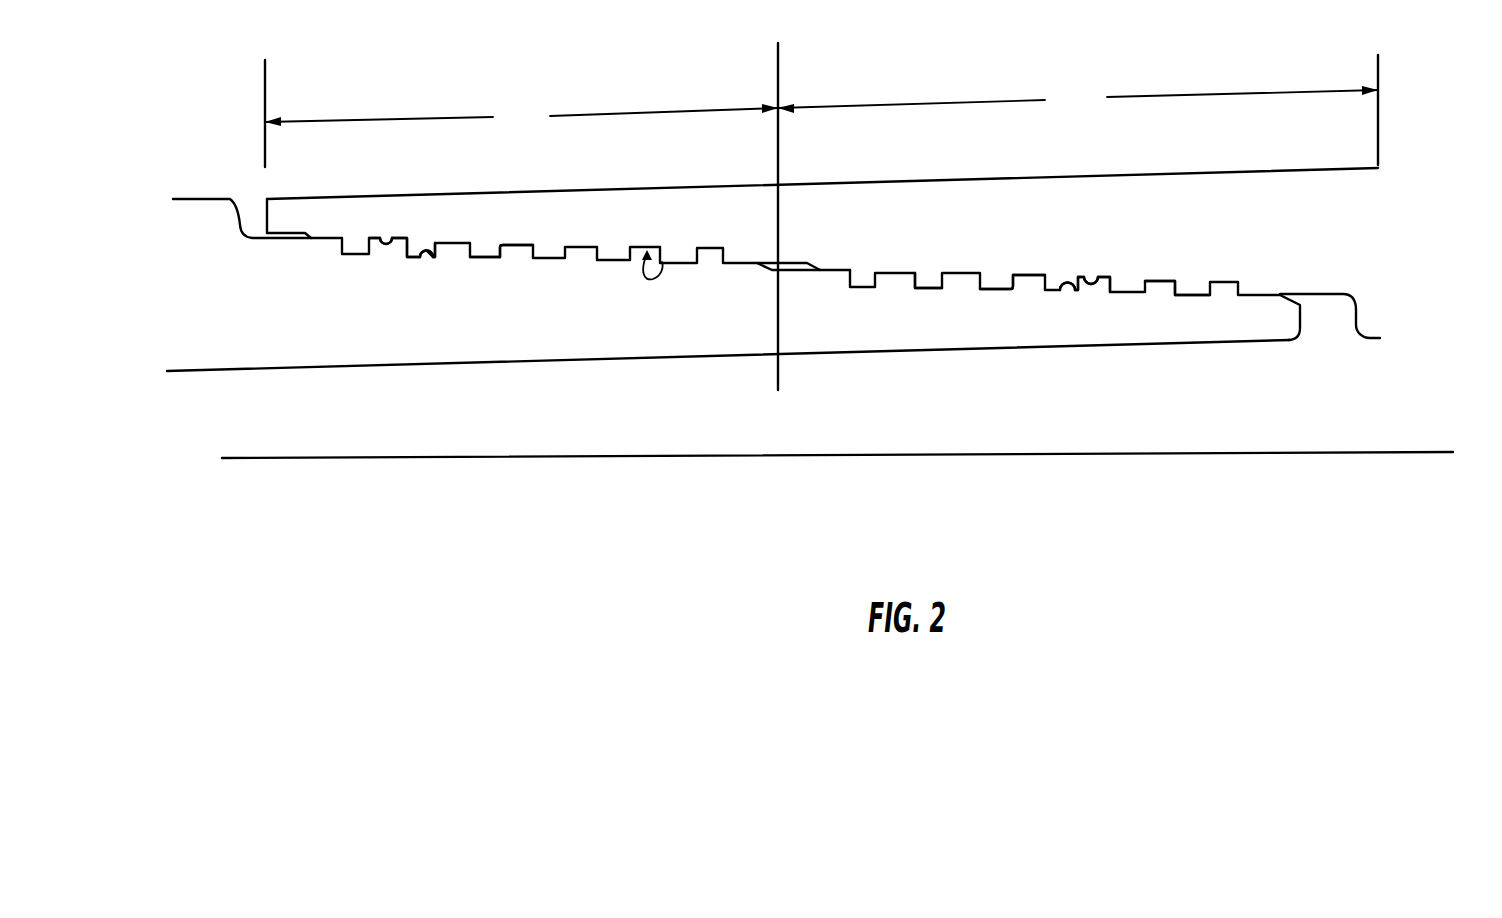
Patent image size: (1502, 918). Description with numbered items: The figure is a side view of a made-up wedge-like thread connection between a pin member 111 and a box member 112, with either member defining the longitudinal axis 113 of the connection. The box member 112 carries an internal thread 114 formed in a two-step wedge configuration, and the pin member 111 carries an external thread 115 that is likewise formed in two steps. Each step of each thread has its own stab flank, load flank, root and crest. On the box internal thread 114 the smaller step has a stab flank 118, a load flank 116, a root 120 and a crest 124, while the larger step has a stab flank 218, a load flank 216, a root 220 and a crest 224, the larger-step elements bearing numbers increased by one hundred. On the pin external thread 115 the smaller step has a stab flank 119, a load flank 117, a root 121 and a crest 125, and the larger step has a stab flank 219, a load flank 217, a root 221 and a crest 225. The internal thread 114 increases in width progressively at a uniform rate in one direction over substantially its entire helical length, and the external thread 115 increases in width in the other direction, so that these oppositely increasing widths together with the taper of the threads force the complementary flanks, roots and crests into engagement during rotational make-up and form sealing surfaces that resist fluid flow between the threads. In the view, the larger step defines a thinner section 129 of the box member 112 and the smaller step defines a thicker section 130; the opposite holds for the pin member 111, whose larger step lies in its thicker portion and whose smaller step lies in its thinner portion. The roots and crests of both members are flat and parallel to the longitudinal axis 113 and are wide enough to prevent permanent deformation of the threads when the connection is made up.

The pin member 111 is at (500, 257).
The box member 112 is at (1127, 275).
The longitudinal axis 113 is at (837, 456).
The internal thread 114 is at (928, 283).
The external thread 115 is at (660, 270).
The load flank 116 is at (1011, 292).
The load flank 117 is at (1010, 276).
The stab flank 118 is at (1175, 296).
The stab flank 119 is at (1177, 281).
The root 120 is at (1088, 276).
The root 121 is at (1076, 290).
The crest 124 is at (1062, 290).
The crest 125 is at (1105, 274).
The thinner section 129 is at (521, 116).
The thicker section 130 is at (1078, 97).
The load flank 216 is at (497, 240).
The load flank 217 is at (506, 258).
The stab flank 218 is at (408, 250).
The stab flank 219 is at (406, 257).
The root 220 is at (380, 240).
The root 221 is at (431, 256).
The crest 224 is at (418, 257).
The crest 225 is at (397, 238).